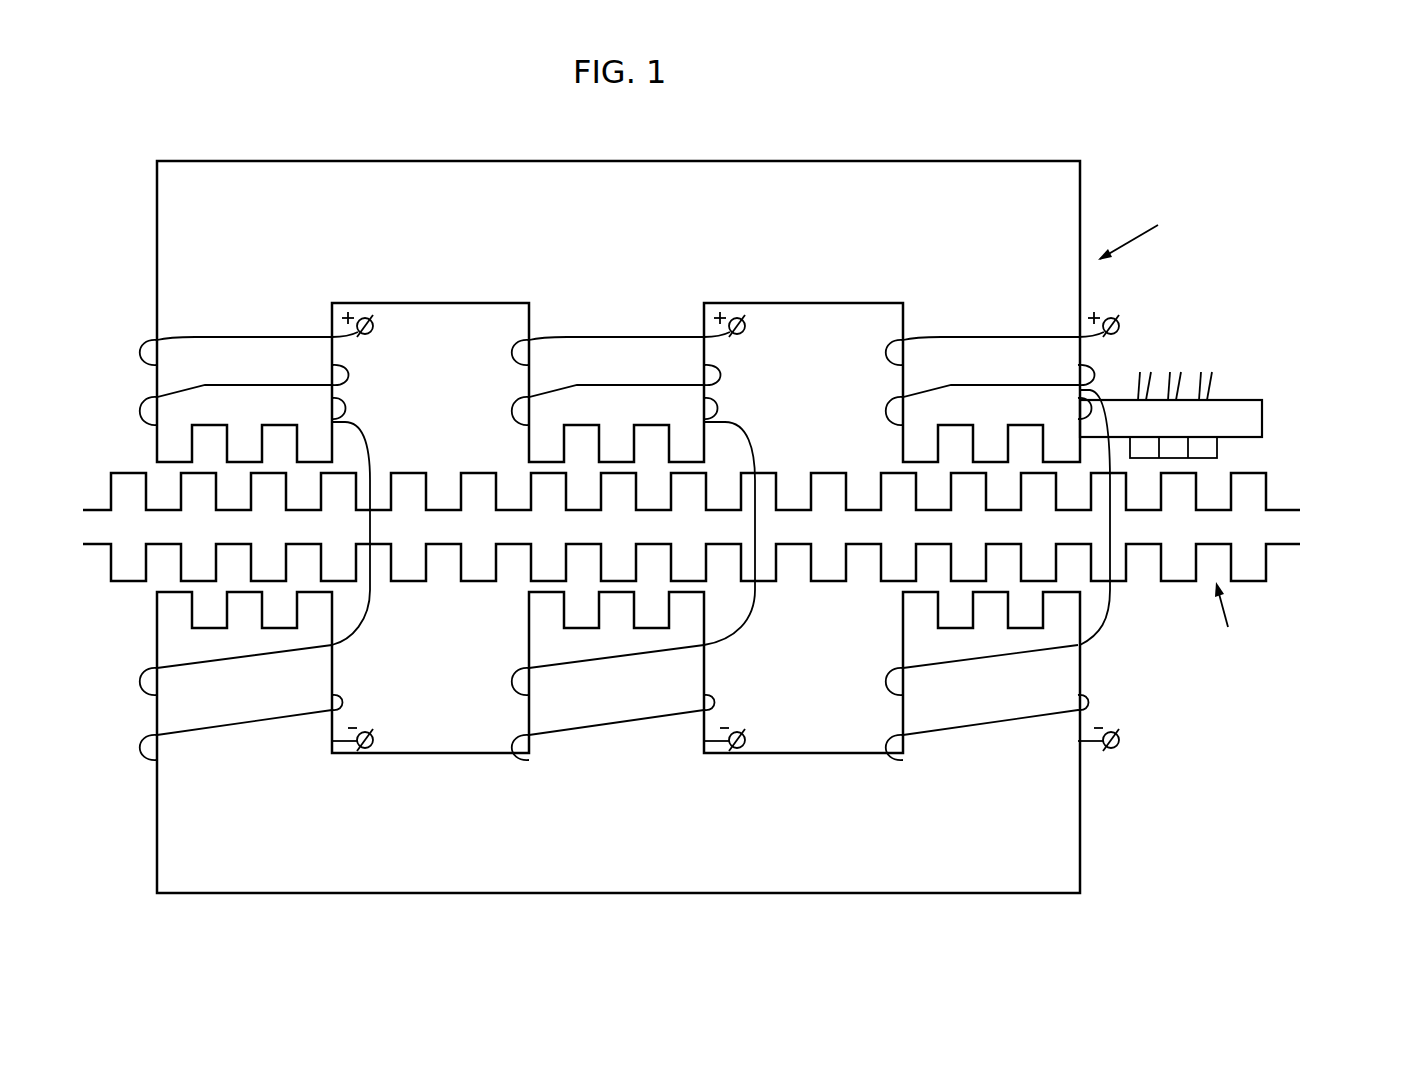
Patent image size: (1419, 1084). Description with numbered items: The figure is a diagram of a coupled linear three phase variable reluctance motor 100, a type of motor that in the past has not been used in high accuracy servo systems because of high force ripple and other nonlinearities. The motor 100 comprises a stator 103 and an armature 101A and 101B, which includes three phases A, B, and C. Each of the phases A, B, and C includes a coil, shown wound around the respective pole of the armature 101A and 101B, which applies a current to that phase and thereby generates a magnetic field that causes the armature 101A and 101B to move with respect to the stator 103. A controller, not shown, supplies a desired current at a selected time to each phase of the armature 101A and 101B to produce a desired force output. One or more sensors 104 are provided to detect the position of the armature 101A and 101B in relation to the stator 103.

The coupled linear three phase variable reluctance motor 100 is at (1181, 931).
The armature 101A is at (1035, 197).
The armature 101B is at (1046, 859).
The stator 103 is at (1280, 526).
The sensors 104 is at (1252, 453).
The phase A is at (243, 760).
The phase B is at (619, 760).
The phase C is at (1011, 759).